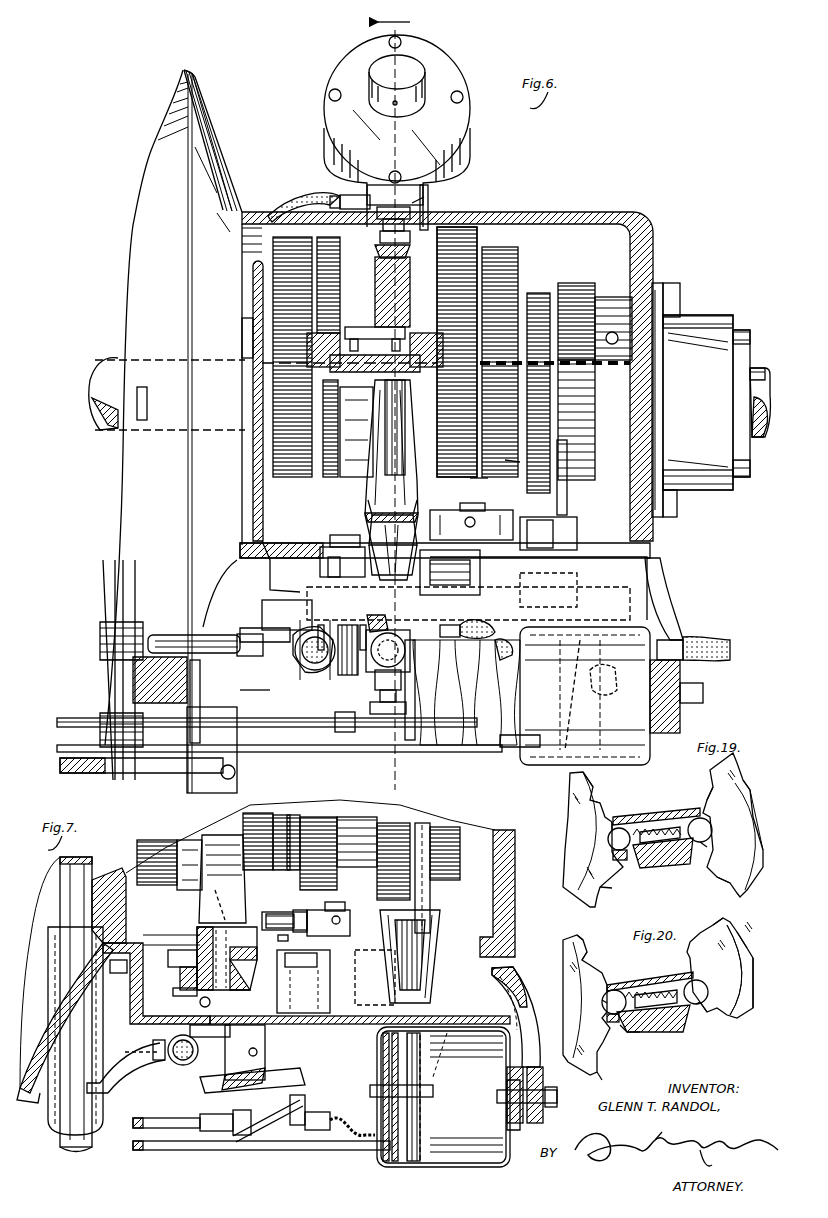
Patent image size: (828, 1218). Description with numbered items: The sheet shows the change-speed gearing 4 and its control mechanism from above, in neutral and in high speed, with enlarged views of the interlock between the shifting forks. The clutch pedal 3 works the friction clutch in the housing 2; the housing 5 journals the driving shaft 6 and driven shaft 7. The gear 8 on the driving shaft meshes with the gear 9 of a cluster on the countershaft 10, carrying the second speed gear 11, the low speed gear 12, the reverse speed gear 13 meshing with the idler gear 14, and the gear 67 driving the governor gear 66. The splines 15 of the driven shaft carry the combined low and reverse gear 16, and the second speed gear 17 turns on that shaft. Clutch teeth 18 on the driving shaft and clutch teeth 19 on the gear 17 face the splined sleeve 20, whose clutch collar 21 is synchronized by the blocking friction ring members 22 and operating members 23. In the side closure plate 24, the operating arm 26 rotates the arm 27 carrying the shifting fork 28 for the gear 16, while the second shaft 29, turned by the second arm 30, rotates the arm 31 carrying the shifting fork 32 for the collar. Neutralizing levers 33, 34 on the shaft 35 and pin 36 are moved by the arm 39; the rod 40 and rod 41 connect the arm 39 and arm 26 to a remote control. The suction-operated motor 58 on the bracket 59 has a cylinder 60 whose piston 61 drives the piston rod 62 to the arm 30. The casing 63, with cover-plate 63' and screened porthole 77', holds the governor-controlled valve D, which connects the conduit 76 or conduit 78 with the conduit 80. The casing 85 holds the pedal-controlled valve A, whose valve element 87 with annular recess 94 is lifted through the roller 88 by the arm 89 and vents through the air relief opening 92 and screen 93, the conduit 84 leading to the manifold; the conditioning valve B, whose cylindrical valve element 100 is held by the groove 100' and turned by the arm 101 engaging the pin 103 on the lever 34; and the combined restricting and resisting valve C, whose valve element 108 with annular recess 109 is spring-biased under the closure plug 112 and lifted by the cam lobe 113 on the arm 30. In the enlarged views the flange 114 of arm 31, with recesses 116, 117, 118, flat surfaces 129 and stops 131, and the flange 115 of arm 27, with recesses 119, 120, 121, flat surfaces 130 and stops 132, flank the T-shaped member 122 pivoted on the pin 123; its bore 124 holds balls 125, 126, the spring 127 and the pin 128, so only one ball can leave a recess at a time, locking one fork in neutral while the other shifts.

In FIG. 6, the housing 2 is at (213, 138).
In FIG. 7, the housing 2 is at (37, 1093).
In FIG. 6, the clutch pedal 3 is at (190, 699).
In FIG. 7, the clutch pedal 3 is at (43, 1153).
In FIG. 6, the change-speed gearing 4 is at (665, 230).
In FIG. 7, the change-speed gearing 4 is at (156, 843).
In FIG. 6, the housing 5 is at (262, 213).
In FIG. 7, the housing 5 is at (117, 882).
In FIG. 6, the driving shaft 6 is at (96, 360).
In FIG. 6, the driven shaft 7 is at (762, 366).
In FIG. 6, the gear 8 is at (284, 478).
In FIG. 7, the gear 8 is at (156, 885).
In FIG. 19, the gear 8 is at (634, 781).
In FIG. 6, the gear 9 is at (394, 777).
In FIG. 6, the countershaft 10 is at (617, 307).
In FIG. 6, the second speed gear 11 is at (470, 233).
In FIG. 6, the low speed gear 12 is at (505, 250).
In FIG. 6, the reverse speed gear 13 is at (582, 283).
In FIG. 6, the idler gear 14 is at (585, 480).
In FIG. 7, the idler gear 14 is at (460, 872).
In FIG. 6, the splines 15 is at (503, 461).
In FIG. 7, the splines 15 is at (358, 820).
In FIG. 6, the combined low and reverse gear 16 is at (543, 294).
In FIG. 7, the combined low and reverse gear 16 is at (396, 823).
In FIG. 6, the second speed gear 17 is at (487, 482).
In FIG. 7, the second speed gear 17 is at (321, 818).
In FIG. 6, the clutch teeth 18 is at (340, 432).
In FIG. 6, the clutch teeth 19 is at (437, 314).
In FIG. 7, the clutch teeth 19 is at (297, 815).
In FIG. 6, the splined sleeve 20 is at (380, 427).
In FIG. 7, the splined sleeve 20 is at (253, 815).
In FIG. 6, the clutch collar 21 is at (374, 322).
In FIG. 7, the clutch collar 21 is at (186, 880).
In FIG. 6, the blocking friction ring member 22 is at (344, 320).
In FIG. 7, the blocking friction ring member 22 is at (278, 815).
In FIG. 6, the operating members 23 is at (356, 327).
In FIG. 7, the side closure plate 24 is at (131, 1000).
In FIG. 6, the operating arm 26 is at (502, 736).
In FIG. 6, the arm 27 is at (580, 531).
In FIG. 7, the arm 27 is at (442, 921).
In FIG. 19, the arm 27 is at (566, 868).
In FIG. 20, the arm 27 is at (578, 1066).
In FIG. 6, the shifting fork 28 is at (568, 506).
In FIG. 7, the shifting fork 28 is at (431, 893).
In FIG. 7, the second shaft 29 is at (288, 1118).
In FIG. 6, the second arm 30 is at (380, 700).
In FIG. 7, the second arm 30 is at (200, 1070).
In FIG. 6, the arm 31 is at (368, 527).
In FIG. 7, the arm 31 is at (204, 913).
In FIG. 19, the arm 31 is at (753, 847).
In FIG. 20, the arm 31 is at (742, 968).
In FIG. 6, the shifting fork 32 is at (370, 506).
In FIG. 7, the shifting fork 32 is at (218, 858).
In FIG. 6, the lever 33 is at (435, 590).
In FIG. 7, the lever 33 is at (299, 970).
In FIG. 6, the lever 34 is at (330, 548).
In FIG. 7, the lever 34 is at (170, 964).
In FIG. 7, the shaft 35 is at (286, 1088).
In FIG. 6, the pin 36 is at (345, 535).
In FIG. 7, the pin 36 is at (210, 1037).
In FIG. 7, the arm 39 is at (268, 1142).
In FIG. 6, the rod 40 is at (285, 720).
In FIG. 7, the rod 40 is at (165, 1119).
In FIG. 6, the rod 41 is at (290, 753).
In FIG. 7, the rod 41 is at (165, 1152).
In FIG. 6, the suction-operated motor 58 is at (553, 760).
In FIG. 7, the suction-operated motor 58 is at (490, 1167).
In FIG. 6, the bracket 59 is at (673, 598).
In FIG. 7, the bracket 59 is at (522, 1015).
In FIG. 6, the cylinder 60 is at (655, 744).
In FIG. 7, the cylinder 60 is at (503, 1166).
In FIG. 6, the piston 61 is at (606, 714).
In FIG. 7, the piston 61 is at (412, 1128).
In FIG. 6, the piston rod 62 is at (608, 692).
In FIG. 7, the piston rod 62 is at (308, 1118).
In FIG. 6, the casing 63 is at (378, 175).
In FIG. 6, the cover-plate 63' is at (410, 109).
In FIG. 6, the gear 66 is at (408, 266).
In FIG. 6, the gear 67 is at (380, 226).
In FIG. 6, the conduit 76 is at (430, 230).
In FIG. 6, the atmospheric porthole 77' is at (397, 95).
In FIG. 6, the conduit 78 is at (416, 206).
In FIG. 6, the conduit 80 is at (303, 196).
In FIG. 6, the conduit 84 is at (176, 630).
In FIG. 6, the casing 85 is at (323, 685).
In FIG. 7, the casing 85 is at (160, 1068).
In FIG. 7, the valve element 87 is at (163, 1040).
In FIG. 7, the roller 88 is at (133, 1051).
In FIG. 6, the arm 89 is at (245, 685).
In FIG. 7, the arm 89 is at (118, 1092).
In FIG. 6, the air relief opening 92 is at (300, 609).
In FIG. 6, the screen 93 is at (300, 626).
In FIG. 6, the annular recess 94 is at (318, 668).
In FIG. 6, the cylindrical valve element 100 is at (355, 621).
In FIG. 6, the groove 100' is at (310, 621).
In FIG. 6, the arm 101 is at (381, 618).
In FIG. 7, the arm 101 is at (157, 1039).
In FIG. 7, the pin 103 is at (176, 992).
In FIG. 7, the valve element 108 is at (268, 1050).
In FIG. 6, the annular recess 109 is at (466, 692).
In FIG. 6, the closure plug 112 is at (425, 690).
In FIG. 7, the cam lobe 113 is at (236, 1048).
In FIG. 7, the flange 114 is at (263, 912).
In FIG. 19, the flange 114 is at (733, 779).
In FIG. 20, the flange 114 is at (737, 1020).
In FIG. 6, the flange 115 is at (548, 590).
In FIG. 7, the flange 115 is at (375, 977).
In FIG. 20, the flange 115 is at (640, 1031).
In FIG. 7, the recess 116 is at (283, 914).
In FIG. 19, the recess 116 is at (713, 787).
In FIG. 20, the recess 116 is at (727, 920).
In FIG. 20, the recess 117 is at (748, 950).
In FIG. 19, the recess 118 is at (750, 827).
In FIG. 20, the recess 118 is at (743, 988).
In FIG. 19, the recess 119 is at (593, 800).
In FIG. 20, the recess 119 is at (590, 965).
In FIG. 19, the recess 120 is at (620, 826).
In FIG. 20, the recess 120 is at (603, 1000).
In FIG. 19, the recess 121 is at (620, 895).
In FIG. 20, the recess 121 is at (612, 1080).
In FIG. 6, the T-shaped member 122 is at (447, 518).
In FIG. 7, the T-shaped member 122 is at (350, 906).
In FIG. 19, the T-shaped member 122 is at (657, 866).
In FIG. 20, the T-shaped member 122 is at (660, 1031).
In FIG. 6, the pin 123 is at (484, 505).
In FIG. 7, the pin 123 is at (337, 907).
In FIG. 19, the bore 124 is at (660, 835).
In FIG. 20, the bore 124 is at (673, 982).
In FIG. 19, the ball 125 is at (622, 860).
In FIG. 20, the ball 125 is at (603, 1022).
In FIG. 19, the ball 126 is at (707, 847).
In FIG. 20, the ball 126 is at (698, 982).
In FIG. 20, the spring 127 is at (623, 1026).
In FIG. 19, the pin 128 is at (677, 822).
In FIG. 20, the pin 128 is at (655, 1033).
In FIG. 7, the flat surfaces 129 is at (294, 940).
In FIG. 19, the flat surfaces 129 is at (647, 818).
In FIG. 20, the flat surfaces 129 is at (697, 970).
In FIG. 19, the flat surfaces 130 is at (690, 818).
In FIG. 20, the flat surfaces 130 is at (683, 990).
In FIG. 6, the stops 131 is at (370, 516).
In FIG. 7, the stops 131 is at (262, 919).
In FIG. 19, the stops 131 is at (730, 883).
In FIG. 20, the stops 131 is at (707, 1015).
In FIG. 6, the stops 132 is at (544, 534).
In FIG. 7, the stops 132 is at (430, 914).
In FIG. 19, the stops 132 is at (592, 785).
In FIG. 20, the stops 132 is at (583, 940).
In FIG. 6, the pedal-controlled valve A is at (298, 672).
In FIG. 6, the conditioning valve B is at (348, 682).
In FIG. 6, the combined restricting and resisting valve C is at (374, 672).
In FIG. 6, the governor-controlled valve D is at (450, 172).